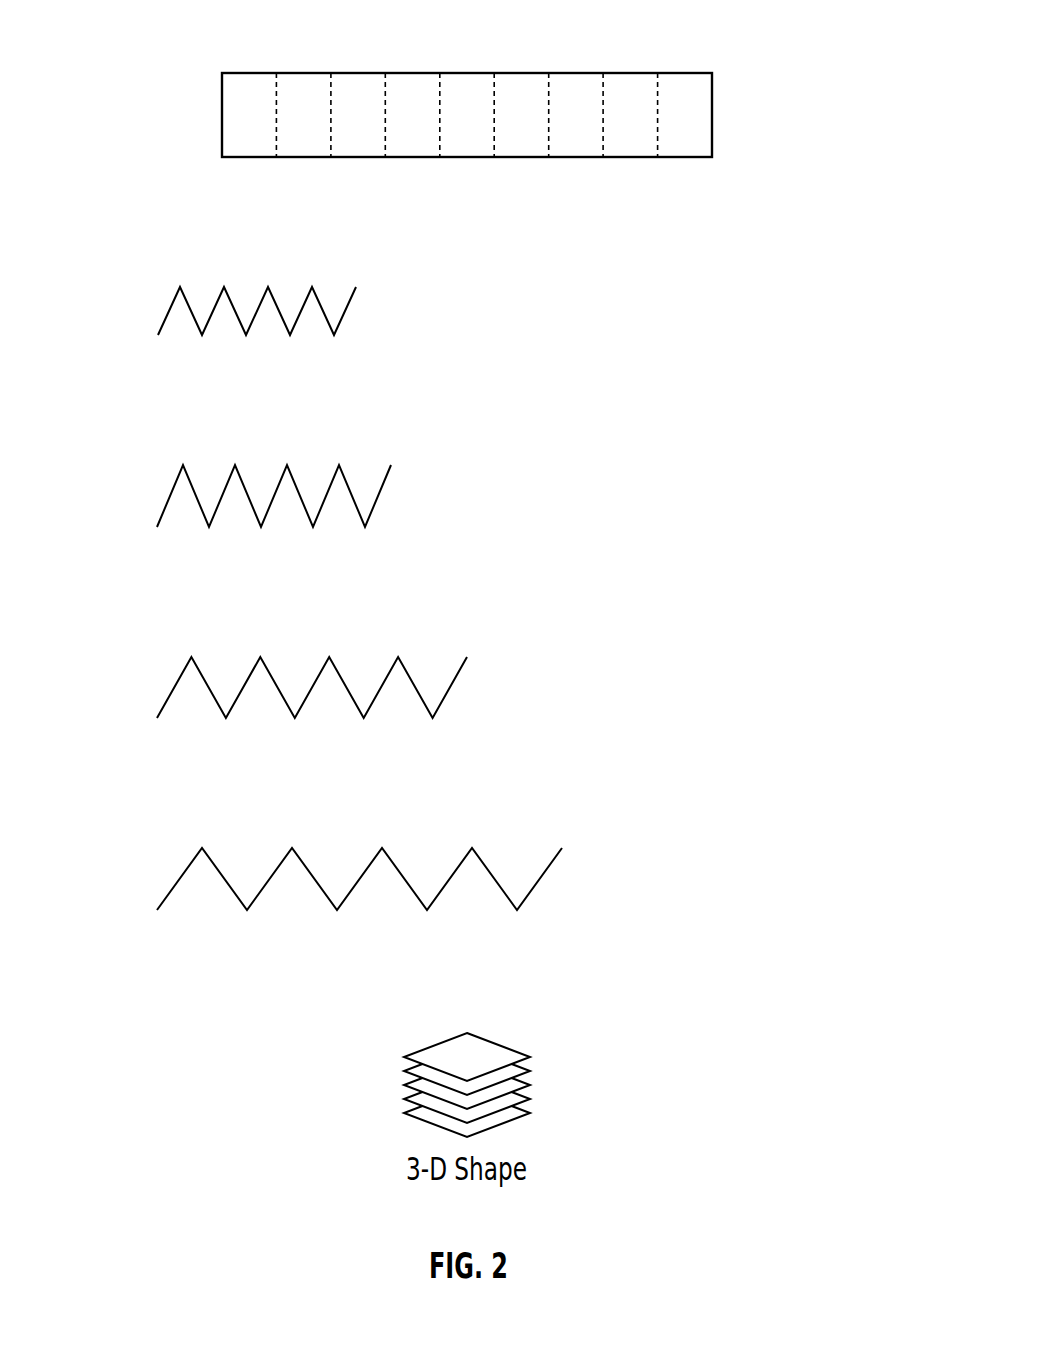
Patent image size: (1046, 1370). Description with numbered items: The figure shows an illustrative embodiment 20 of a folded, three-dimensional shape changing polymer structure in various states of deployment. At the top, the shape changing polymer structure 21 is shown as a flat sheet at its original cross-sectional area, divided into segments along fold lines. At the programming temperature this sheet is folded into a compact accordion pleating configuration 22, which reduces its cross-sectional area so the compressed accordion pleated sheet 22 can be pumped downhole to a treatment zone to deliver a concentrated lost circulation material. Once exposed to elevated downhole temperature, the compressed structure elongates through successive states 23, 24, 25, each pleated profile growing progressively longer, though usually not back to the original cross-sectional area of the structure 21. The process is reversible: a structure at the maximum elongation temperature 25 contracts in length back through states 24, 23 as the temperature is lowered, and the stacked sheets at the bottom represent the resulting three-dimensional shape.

The illustrative embodiment 20 is at (788, 27).
The shape changing polymer structure 21 is at (211, 98).
The accordion pleating configuration 22 is at (148, 299).
The partially elongated shape changing polymer 23 is at (148, 479).
The further elongated shape changing polymer 24 is at (148, 671).
The maximum elongation structure 25 is at (148, 869).